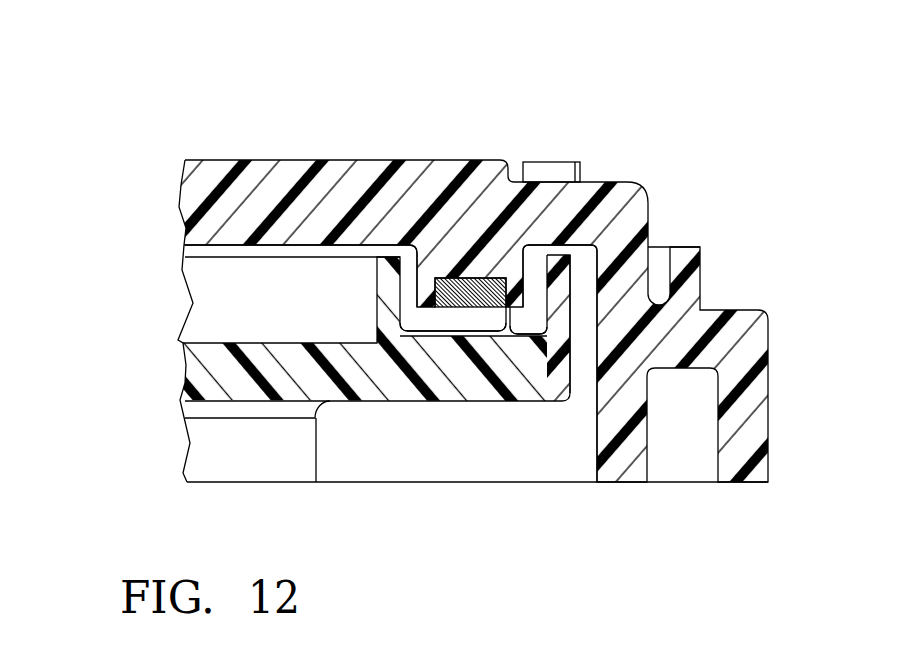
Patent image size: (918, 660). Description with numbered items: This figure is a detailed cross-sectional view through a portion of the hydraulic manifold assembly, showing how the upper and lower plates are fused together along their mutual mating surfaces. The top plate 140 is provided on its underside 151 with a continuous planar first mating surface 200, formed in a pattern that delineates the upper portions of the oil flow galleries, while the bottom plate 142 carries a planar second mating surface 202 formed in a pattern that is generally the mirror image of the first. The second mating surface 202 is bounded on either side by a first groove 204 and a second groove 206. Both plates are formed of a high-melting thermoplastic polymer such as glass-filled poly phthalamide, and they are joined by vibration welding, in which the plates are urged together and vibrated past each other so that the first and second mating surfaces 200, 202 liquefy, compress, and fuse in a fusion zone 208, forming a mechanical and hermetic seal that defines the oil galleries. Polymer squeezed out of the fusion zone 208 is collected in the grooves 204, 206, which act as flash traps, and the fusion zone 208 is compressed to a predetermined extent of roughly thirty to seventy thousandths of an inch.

The top plate 140 is at (226, 160).
The bottom plate 142 is at (197, 340).
The underside 151 is at (309, 244).
The first mating surface 200 is at (523, 326).
The second mating surface 202 is at (487, 278).
The first groove 204 is at (403, 327).
The second groove 206 is at (519, 330).
The fusion zone 208 is at (485, 307).